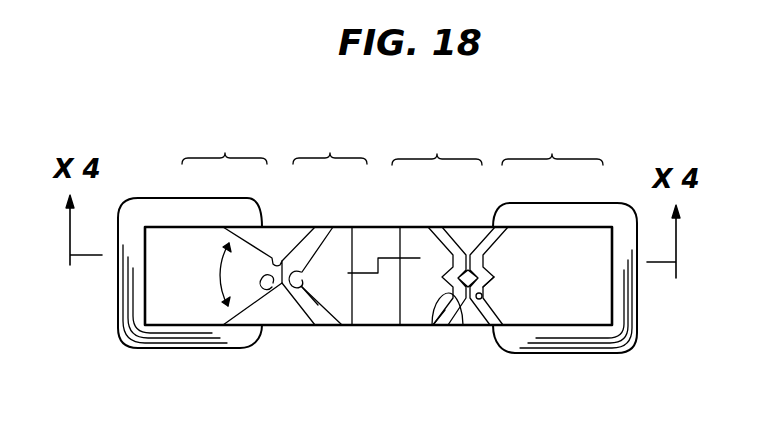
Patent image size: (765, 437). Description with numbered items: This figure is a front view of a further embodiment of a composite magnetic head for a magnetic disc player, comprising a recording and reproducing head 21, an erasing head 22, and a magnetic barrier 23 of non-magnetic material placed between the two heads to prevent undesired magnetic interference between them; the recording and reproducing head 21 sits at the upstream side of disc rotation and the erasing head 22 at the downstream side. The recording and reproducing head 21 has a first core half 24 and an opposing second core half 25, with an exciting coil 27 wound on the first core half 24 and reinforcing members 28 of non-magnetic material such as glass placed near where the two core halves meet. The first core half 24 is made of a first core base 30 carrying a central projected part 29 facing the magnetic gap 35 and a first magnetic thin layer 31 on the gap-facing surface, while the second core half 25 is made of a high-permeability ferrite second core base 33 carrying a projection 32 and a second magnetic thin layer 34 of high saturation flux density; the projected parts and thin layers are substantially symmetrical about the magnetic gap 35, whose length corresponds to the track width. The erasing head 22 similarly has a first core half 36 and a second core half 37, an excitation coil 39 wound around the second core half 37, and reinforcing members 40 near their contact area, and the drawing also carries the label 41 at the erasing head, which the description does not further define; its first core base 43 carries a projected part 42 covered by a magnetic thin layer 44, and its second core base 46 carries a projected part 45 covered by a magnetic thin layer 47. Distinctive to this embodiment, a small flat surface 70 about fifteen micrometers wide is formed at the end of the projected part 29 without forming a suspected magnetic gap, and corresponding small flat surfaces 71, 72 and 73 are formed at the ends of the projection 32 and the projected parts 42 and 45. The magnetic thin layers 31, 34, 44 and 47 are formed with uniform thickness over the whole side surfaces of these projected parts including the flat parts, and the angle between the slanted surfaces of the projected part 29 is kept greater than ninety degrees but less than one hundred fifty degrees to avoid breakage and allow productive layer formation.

The recording and reproducing head 21 is at (182, 153).
The erasing head 22 is at (577, 152).
The magnetic barrier 23 is at (376, 241).
The first core half 24 is at (224, 148).
The second core half 25 is at (330, 148).
The exciting coil 27 is at (192, 349).
The reinforcing members 28 is at (282, 303).
The projected part 29 is at (263, 277).
The first core base 30 is at (193, 232).
The first magnetic thin layer 31 is at (240, 235).
The projection 32 is at (348, 273).
The second core base 33 is at (347, 227).
The second magnetic thin layer 34 is at (320, 227).
The magnetic gap 35 is at (277, 258).
The first core half 36 is at (437, 149).
The second core half 37 is at (552, 149).
The excitation coil 39 is at (577, 353).
The reinforcing members 40 is at (472, 322).
The outer chevron arms 41 is at (476, 227).
The projected part 42 is at (432, 326).
The first core base 43 is at (415, 227).
The magnetic thin layer 44 is at (437, 227).
The projected part 45 is at (490, 280).
The second core base 46 is at (572, 247).
The magnetic thin layer 47 is at (496, 227).
The small flat surface 70 is at (220, 295).
The flat surface 71 is at (303, 287).
The flat surface 72 is at (462, 317).
The flat surface 73 is at (483, 296).